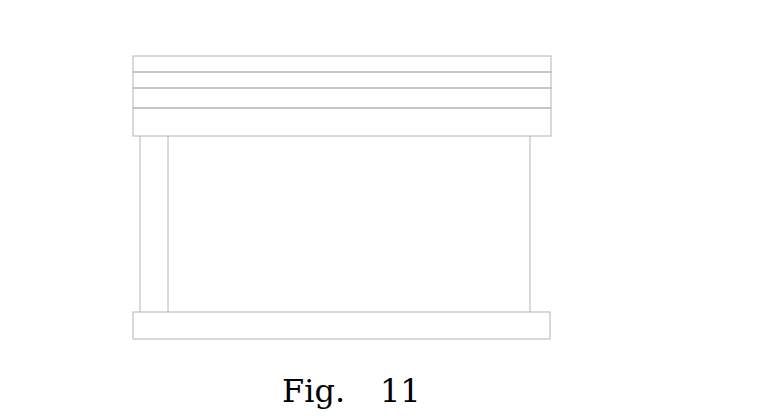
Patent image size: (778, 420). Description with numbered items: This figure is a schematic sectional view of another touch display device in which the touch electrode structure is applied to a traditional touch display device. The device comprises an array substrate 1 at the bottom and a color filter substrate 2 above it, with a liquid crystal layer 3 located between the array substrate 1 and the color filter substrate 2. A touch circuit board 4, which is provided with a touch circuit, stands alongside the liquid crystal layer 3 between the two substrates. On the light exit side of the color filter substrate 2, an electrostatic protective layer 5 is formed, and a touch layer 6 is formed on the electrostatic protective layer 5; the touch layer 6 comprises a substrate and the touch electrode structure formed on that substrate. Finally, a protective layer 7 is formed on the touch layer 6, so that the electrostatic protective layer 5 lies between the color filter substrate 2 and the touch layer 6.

The array substrate 1 is at (392, 312).
The color filter substrate 2 is at (391, 117).
The liquid crystal layer 3 is at (575, 224).
The touch circuit board 4 is at (105, 224).
The electrostatic protective layer 5 is at (293, 88).
The touch layer 6 is at (391, 67).
The protective layer 7 is at (295, 51).